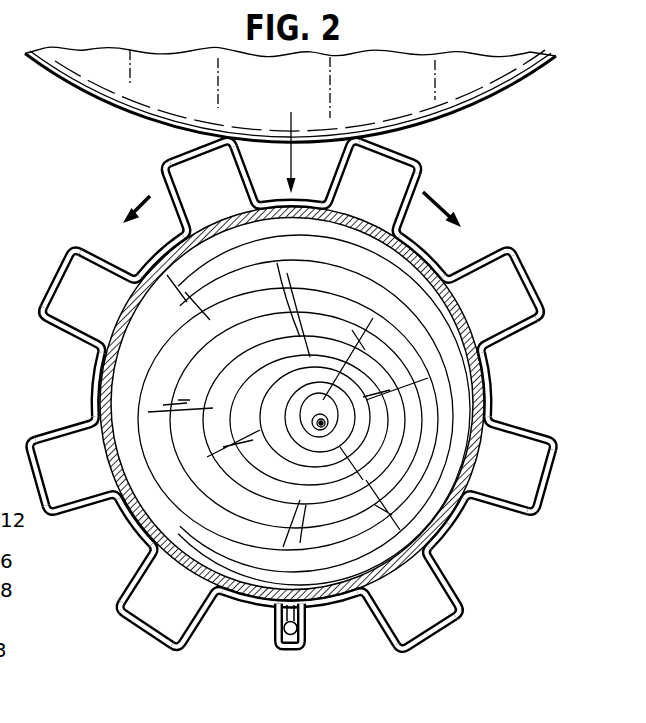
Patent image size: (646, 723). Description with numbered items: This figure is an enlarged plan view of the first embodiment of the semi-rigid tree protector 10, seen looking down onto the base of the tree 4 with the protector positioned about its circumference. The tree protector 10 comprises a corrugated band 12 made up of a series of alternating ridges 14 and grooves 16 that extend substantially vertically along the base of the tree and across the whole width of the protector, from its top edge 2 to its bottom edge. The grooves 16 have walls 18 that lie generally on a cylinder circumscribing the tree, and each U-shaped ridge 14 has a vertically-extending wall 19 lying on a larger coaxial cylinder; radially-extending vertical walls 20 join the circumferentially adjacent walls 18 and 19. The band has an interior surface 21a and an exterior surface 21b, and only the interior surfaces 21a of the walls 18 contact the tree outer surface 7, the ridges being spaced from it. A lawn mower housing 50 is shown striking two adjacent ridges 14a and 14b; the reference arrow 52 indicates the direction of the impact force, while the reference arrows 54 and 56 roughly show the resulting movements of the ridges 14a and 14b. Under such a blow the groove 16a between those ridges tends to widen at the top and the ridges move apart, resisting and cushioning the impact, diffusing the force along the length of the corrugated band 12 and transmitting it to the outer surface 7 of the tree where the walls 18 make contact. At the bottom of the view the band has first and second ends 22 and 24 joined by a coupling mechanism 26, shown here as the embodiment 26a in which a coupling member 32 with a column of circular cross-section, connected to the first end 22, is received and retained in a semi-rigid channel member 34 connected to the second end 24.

The top edge 2 is at (434, 642).
The tree 4 is at (245, 382).
The tree outer surface 7 is at (468, 483).
The tree protector 10 is at (65, 213).
The corrugated band 12 is at (42, 272).
The ridges 14 is at (539, 263).
The adjacent ridge 14a is at (401, 152).
The adjacent ridge 14b is at (182, 150).
The grooves 16 is at (510, 376).
The groove 16a is at (318, 189).
The walls 18 is at (440, 507).
The vertically-extending wall 19 is at (550, 494).
The radially-extending vertical walls 20 is at (512, 427).
The interior surface 21a is at (509, 507).
The exterior surface 21b is at (461, 594).
The first end 22 is at (252, 627).
The second end 24 is at (326, 621).
The coupling mechanism 26 is at (295, 675).
The coupling mechanism embodiment 26a is at (279, 681).
The coupling member 32 is at (273, 637).
The channel member 34 is at (305, 642).
The lawn mower housing 50 is at (100, 104).
The reference arrow 52 is at (291, 117).
The reference arrow 54 is at (423, 192).
The reference arrow 56 is at (150, 196).